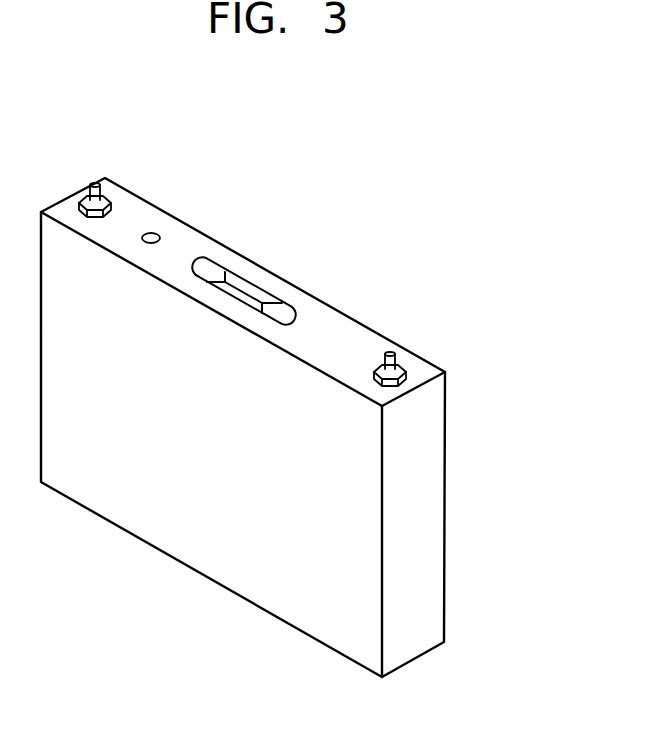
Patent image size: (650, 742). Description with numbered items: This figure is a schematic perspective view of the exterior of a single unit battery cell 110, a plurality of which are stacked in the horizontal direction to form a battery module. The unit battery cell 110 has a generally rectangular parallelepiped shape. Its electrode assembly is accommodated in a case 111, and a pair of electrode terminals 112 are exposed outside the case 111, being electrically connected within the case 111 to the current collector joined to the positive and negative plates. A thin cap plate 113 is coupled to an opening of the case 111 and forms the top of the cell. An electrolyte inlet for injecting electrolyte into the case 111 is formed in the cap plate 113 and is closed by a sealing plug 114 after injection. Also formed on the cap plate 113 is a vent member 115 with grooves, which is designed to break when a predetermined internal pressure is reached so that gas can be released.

The unit battery cell 110 is at (454, 336).
The case 111 is at (205, 555).
The electrode terminals 112 is at (95, 182).
The cap plate 113 is at (325, 322).
The sealing plug 114 is at (155, 232).
The vent member 115 is at (247, 292).